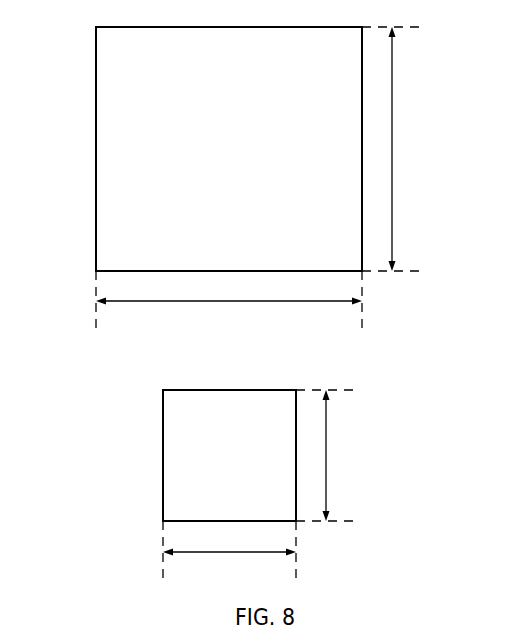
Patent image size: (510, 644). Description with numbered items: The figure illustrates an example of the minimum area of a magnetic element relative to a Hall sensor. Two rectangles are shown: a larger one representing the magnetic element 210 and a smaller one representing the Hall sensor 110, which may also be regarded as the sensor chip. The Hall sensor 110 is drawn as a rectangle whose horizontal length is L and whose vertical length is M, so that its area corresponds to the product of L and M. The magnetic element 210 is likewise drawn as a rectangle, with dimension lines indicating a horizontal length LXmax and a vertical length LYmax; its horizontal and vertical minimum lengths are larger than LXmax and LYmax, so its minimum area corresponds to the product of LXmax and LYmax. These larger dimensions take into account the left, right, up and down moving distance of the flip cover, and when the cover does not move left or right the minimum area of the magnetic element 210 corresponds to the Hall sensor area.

The magnetic element 210 is at (96, 150).
The Hall sensor 110 is at (163, 456).
The vertical minimum length LYmax is at (412, 149).
The horizontal minimum length LXmax is at (229, 302).
The vertical length of the Hall sensor M is at (324, 455).
The horizontal length of the Hall sensor L is at (229, 552).